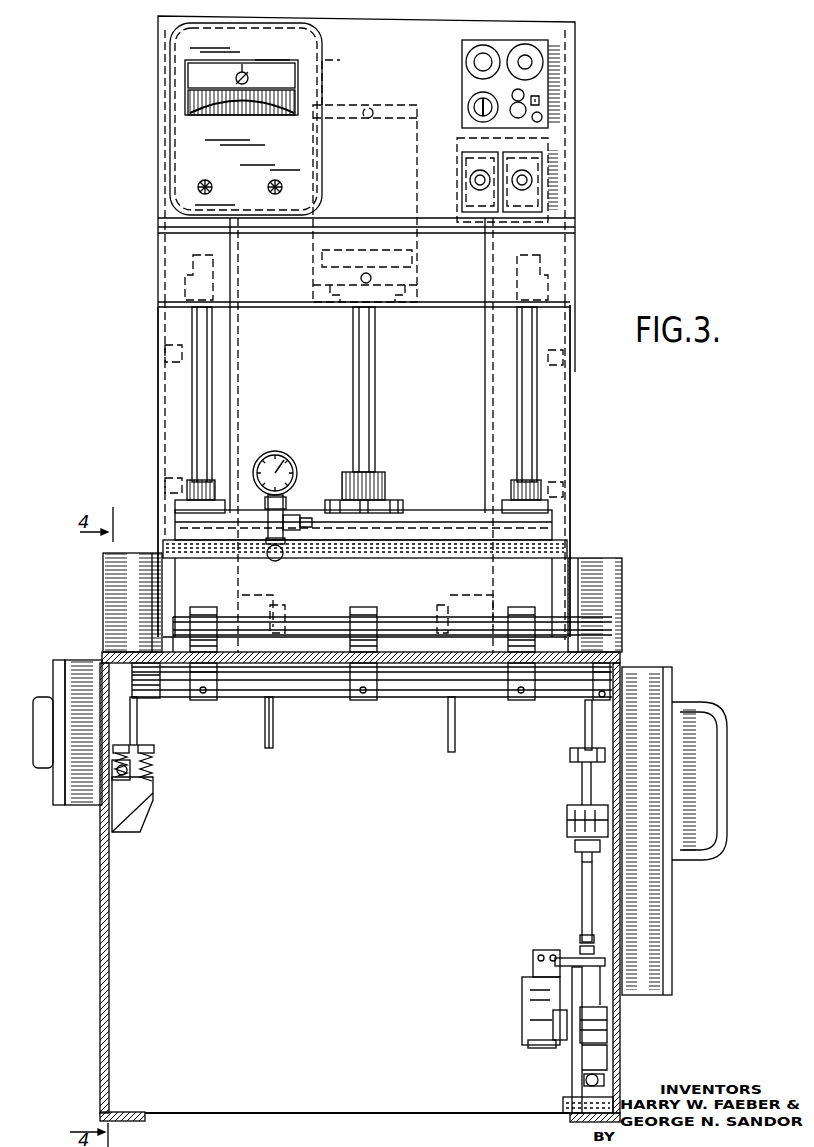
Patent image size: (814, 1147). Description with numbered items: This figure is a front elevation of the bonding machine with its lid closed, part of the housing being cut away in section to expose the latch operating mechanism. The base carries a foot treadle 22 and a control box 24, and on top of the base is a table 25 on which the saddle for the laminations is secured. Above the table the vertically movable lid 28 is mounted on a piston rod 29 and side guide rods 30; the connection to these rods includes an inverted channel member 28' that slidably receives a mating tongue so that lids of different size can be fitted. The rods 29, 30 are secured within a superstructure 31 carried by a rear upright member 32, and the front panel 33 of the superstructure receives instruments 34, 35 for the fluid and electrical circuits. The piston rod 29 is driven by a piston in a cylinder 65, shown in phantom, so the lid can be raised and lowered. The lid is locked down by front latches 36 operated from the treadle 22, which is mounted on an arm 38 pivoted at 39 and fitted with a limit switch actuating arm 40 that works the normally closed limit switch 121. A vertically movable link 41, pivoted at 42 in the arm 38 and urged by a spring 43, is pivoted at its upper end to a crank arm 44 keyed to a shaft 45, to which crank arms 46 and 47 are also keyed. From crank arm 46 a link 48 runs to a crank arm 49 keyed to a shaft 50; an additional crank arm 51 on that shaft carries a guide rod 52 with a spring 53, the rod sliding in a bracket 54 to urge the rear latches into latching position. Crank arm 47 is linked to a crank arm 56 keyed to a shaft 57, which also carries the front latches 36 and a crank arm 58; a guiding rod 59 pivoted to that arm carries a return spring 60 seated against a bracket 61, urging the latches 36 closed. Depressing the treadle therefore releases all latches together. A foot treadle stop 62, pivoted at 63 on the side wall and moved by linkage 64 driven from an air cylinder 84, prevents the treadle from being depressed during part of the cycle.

The foot treadle 22 is at (600, 978).
The control box 24 is at (678, 930).
The table 25 is at (258, 648).
The lid 28 is at (394, 578).
The inverted channel member 28' is at (403, 516).
The piston rod 29 is at (353, 402).
The side guide rods 30 is at (192, 420).
The superstructure 31 is at (576, 198).
The rear upright member 32 is at (160, 388).
The front panel 33 is at (557, 140).
The instruments 34 is at (548, 85).
The instruments 35 is at (195, 53).
The front latches 36 is at (226, 592).
The arm 38 is at (560, 1035).
The pivot 39 is at (555, 1030).
The limit switch actuating arm 40 is at (522, 1000).
The vertically movable link 41 is at (582, 897).
The pivot 42 is at (600, 1015).
The spring 43 is at (582, 936).
The crank arm 44 is at (613, 840).
The shaft 45 is at (567, 823).
The crank arm 46 is at (575, 846).
The crank arm 47 is at (595, 770).
The link 48 is at (572, 790).
The crank arm 49 is at (585, 728).
The shaft 50 is at (289, 701).
The crank arm 51 is at (143, 719).
The guide rod 52 is at (81, 820).
The spring 53 is at (110, 770).
The bracket 54 is at (113, 815).
The crank arm 56 is at (585, 728).
The shaft 57 is at (288, 700).
The crank arm 58 is at (136, 707).
The guiding rod 59 is at (146, 768).
The return spring 60 is at (140, 770).
The bracket 61 is at (148, 796).
The foot treadle stop 62 is at (575, 1060).
The pivot 63 is at (563, 1105).
The linkage 64 is at (600, 1076).
The cylinder 65 is at (420, 135).
The cylinder 84 is at (600, 1068).
The limit switch 121 is at (525, 985).